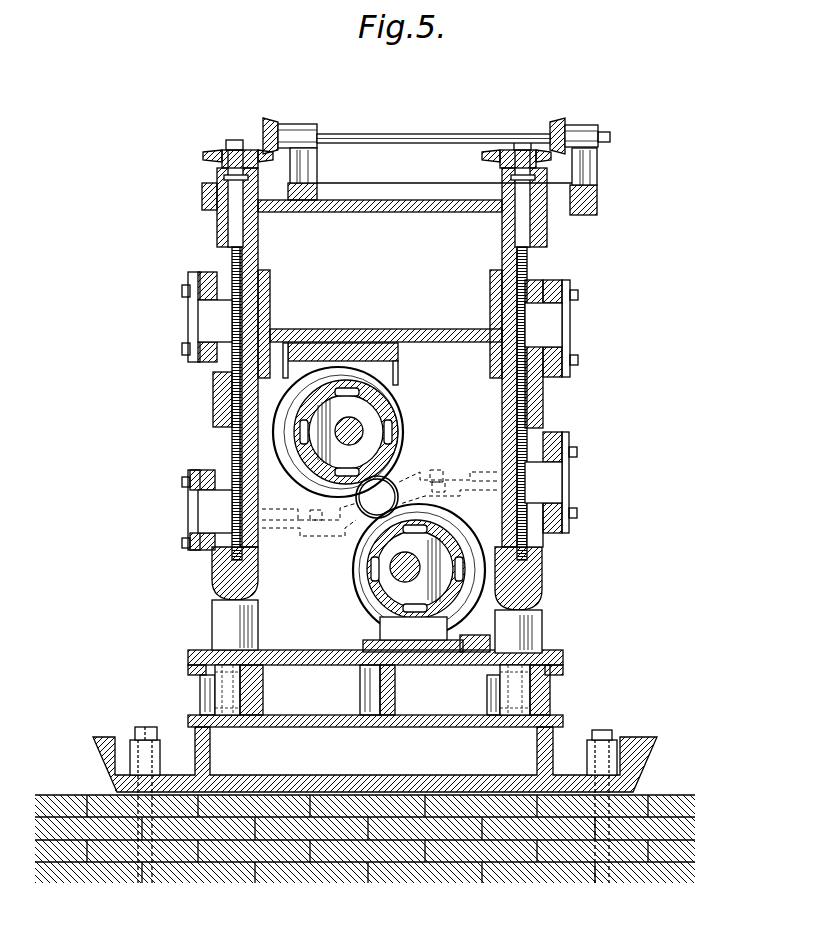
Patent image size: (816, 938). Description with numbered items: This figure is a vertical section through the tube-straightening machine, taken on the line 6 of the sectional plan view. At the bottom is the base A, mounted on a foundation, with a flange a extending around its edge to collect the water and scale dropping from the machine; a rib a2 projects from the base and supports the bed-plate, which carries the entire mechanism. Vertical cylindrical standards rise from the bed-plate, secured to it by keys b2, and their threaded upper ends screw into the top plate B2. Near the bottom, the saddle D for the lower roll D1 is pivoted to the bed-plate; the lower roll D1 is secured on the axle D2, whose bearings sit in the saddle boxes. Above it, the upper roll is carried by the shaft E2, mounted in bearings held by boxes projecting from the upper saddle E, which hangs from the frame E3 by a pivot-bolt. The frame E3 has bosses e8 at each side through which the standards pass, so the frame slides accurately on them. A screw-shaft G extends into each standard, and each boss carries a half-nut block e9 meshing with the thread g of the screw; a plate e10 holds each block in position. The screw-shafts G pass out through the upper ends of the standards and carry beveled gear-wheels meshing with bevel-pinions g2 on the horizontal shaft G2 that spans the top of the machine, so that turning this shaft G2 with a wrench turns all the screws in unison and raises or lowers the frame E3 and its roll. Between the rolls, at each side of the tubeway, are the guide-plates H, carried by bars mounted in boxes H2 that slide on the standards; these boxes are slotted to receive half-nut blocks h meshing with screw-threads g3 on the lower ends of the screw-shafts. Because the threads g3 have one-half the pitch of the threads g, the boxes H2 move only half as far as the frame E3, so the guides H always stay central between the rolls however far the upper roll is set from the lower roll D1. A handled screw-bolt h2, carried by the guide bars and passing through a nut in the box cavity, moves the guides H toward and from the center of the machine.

The base A is at (375, 759).
The flange a is at (373, 764).
The rib a2 is at (374, 751).
The keys b2 is at (490, 700).
The screw-shaft G is at (228, 231).
The thread g is at (232, 263).
The bevel-pinions g2 is at (394, 137).
The adjusting shaft G2 is at (452, 134).
The top plate B2 is at (427, 201).
The bosses e8 is at (492, 301).
The block e9 is at (380, 323).
The plate e10 is at (376, 324).
The screw-threads g3 is at (220, 438).
The section line 6 is at (195, 462).
The blocks h is at (380, 497).
The handled screw-bolt h2 is at (375, 491).
The frame E3 is at (400, 325).
The upper saddle E is at (340, 364).
The shaft E2 is at (338, 432).
The guide-plates H is at (379, 503).
The boxes H2 is at (267, 540).
The lower roll D1 is at (406, 570).
The axle D2 is at (416, 569).
The saddle D is at (415, 634).